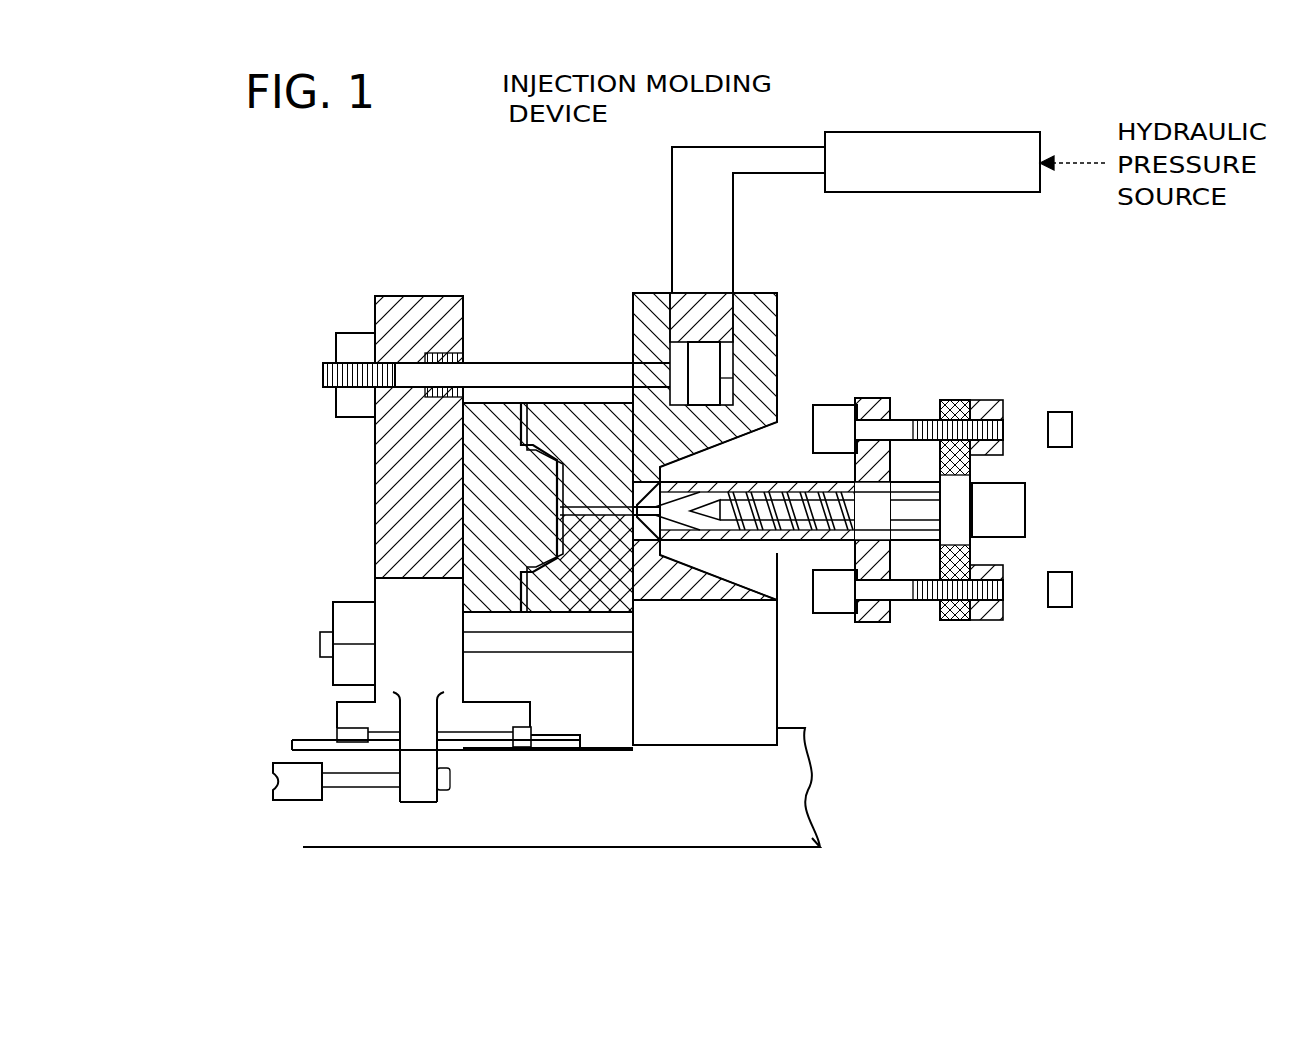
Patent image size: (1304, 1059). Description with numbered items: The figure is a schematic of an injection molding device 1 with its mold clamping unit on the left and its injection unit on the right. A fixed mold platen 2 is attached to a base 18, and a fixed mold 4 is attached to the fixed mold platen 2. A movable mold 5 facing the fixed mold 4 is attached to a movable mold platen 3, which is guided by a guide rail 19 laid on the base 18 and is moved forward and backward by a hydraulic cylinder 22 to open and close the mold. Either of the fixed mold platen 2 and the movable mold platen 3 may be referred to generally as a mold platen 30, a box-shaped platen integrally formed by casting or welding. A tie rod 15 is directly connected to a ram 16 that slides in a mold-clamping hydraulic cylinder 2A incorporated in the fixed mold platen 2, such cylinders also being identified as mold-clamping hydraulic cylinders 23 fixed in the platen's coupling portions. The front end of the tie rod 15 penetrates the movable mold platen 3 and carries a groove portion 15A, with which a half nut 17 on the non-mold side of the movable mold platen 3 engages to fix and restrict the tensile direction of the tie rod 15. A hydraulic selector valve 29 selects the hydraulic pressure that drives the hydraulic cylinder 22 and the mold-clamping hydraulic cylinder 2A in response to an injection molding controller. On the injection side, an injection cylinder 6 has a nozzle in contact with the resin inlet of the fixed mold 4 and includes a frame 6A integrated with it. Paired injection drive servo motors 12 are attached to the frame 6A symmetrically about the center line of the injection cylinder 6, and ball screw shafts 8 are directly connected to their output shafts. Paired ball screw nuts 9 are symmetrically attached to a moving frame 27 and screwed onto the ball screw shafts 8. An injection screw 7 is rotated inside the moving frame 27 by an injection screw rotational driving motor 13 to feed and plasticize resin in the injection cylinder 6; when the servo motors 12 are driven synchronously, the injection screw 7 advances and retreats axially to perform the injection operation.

The injection molding device 1 is at (578, 262).
The fixed mold platen 2 is at (777, 692).
The mold-clamping hydraulic cylinder 2A is at (777, 295).
The movable mold platen 3 is at (375, 480).
The fixed mold 4 is at (583, 612).
The movable mold 5 is at (497, 612).
The injection cylinder 6 is at (790, 560).
The frame 6A is at (870, 625).
The injection screw 7 is at (790, 470).
The ball screw shaft 8 is at (1025, 448).
The ball screw nut 9 is at (985, 395).
The injection drive servo motor 12 is at (855, 405).
The injection screw rotational driving motor 13 is at (1025, 525).
The tie rod 15 is at (453, 317).
The groove portion 15A is at (325, 370).
The ram 16 is at (790, 300).
The half nut 17 is at (355, 330).
The base 18 is at (810, 797).
The guide rail 19 is at (318, 740).
The hydraulic cylinder 22 is at (270, 780).
The mold-clamping hydraulic cylinder 23 is at (697, 300).
The moving frame 27 is at (955, 625).
The hydraulic selector valve 29 is at (935, 130).
The mold platen 30 is at (571, 533).